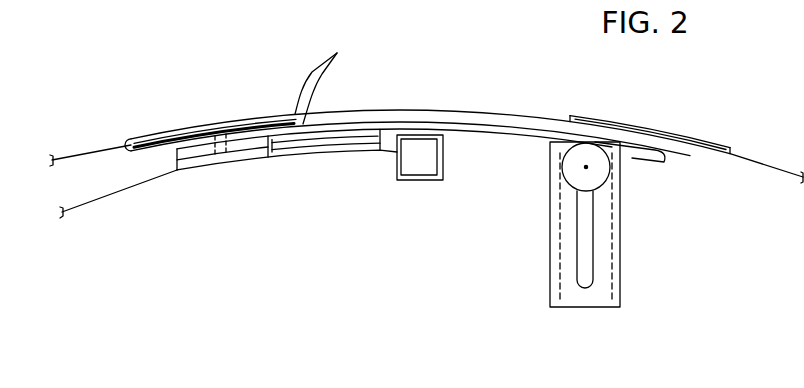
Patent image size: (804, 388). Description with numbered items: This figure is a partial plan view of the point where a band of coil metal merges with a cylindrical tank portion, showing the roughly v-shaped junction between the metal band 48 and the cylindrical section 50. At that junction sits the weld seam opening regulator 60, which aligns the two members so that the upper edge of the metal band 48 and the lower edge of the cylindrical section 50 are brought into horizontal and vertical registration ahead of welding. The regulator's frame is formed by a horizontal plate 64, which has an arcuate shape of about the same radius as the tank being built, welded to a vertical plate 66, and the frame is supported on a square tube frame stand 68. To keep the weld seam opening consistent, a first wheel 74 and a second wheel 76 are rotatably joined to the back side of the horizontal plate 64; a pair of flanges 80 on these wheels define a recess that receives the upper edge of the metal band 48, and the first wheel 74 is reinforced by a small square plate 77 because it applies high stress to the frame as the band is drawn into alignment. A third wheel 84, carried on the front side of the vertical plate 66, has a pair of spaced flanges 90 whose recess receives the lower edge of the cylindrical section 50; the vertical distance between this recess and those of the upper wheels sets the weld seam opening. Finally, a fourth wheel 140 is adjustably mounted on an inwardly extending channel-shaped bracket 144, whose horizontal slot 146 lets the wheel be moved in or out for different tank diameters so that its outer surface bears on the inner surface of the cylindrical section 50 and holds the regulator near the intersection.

The metal band 48 is at (98, 151).
The cylindrical section 50 is at (117, 193).
The weld seam opening regulator 60 is at (378, 168).
The horizontal plate 64 is at (416, 127).
The vertical plate 66 is at (257, 156).
The square tube frame stand 68 is at (428, 184).
The first wheel 74 is at (216, 131).
The second wheel 76 is at (683, 138).
The small square plate 77 is at (181, 162).
The pair of flanges 80 is at (723, 158).
The third wheel 84 is at (340, 150).
The pair of spaced flanges 90 is at (266, 152).
The fourth wheel 140 is at (577, 180).
The channel-shaped bracket 144 is at (603, 277).
The horizontal slot 146 is at (588, 230).